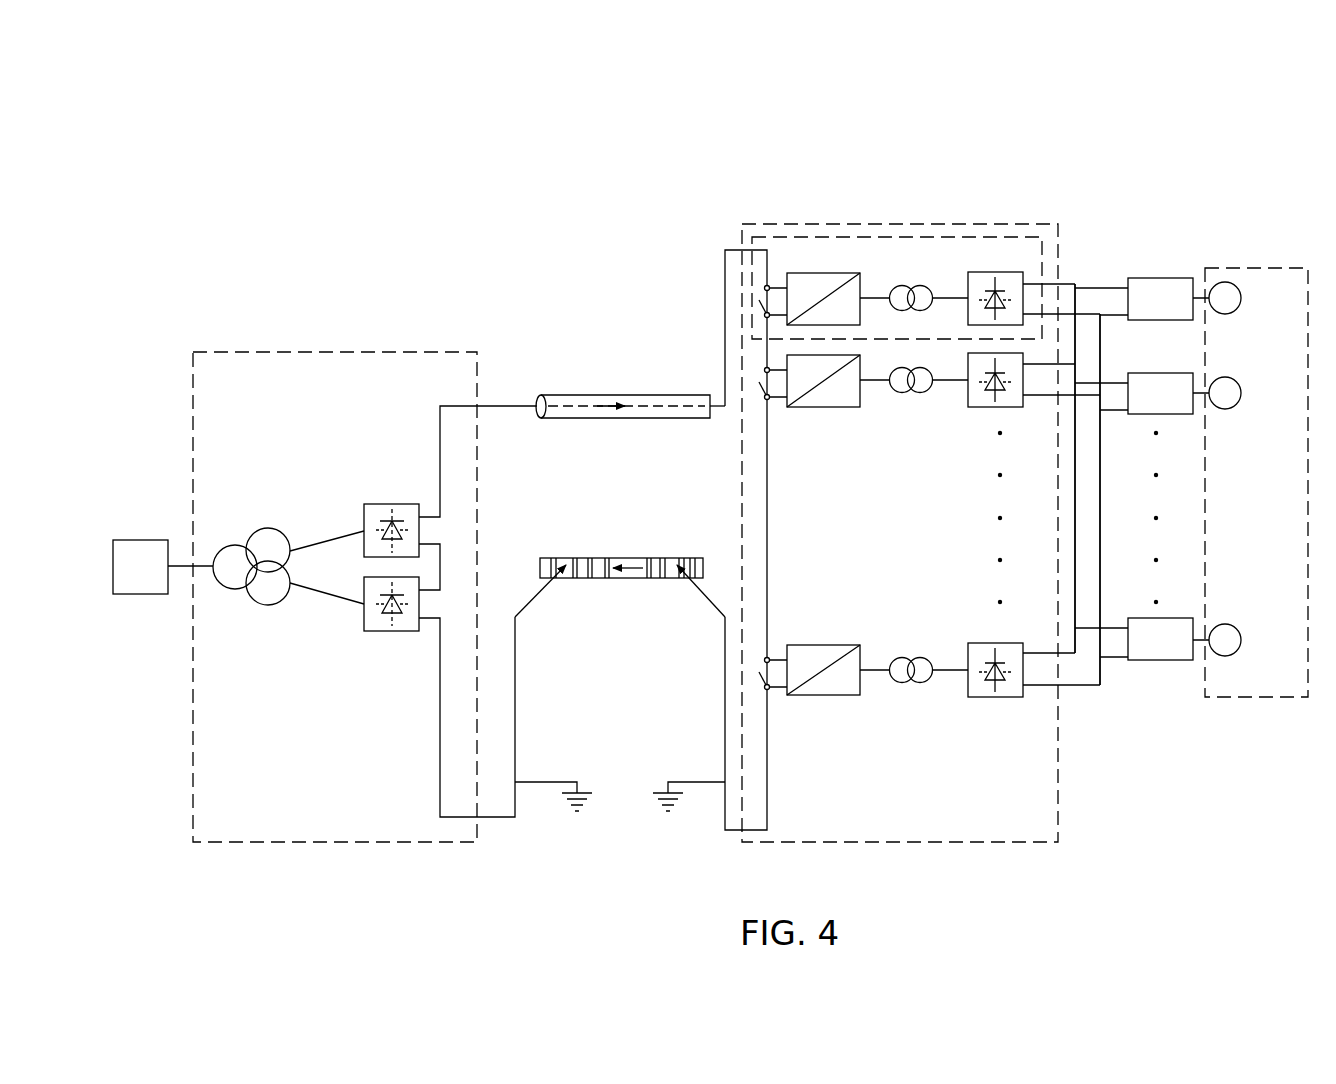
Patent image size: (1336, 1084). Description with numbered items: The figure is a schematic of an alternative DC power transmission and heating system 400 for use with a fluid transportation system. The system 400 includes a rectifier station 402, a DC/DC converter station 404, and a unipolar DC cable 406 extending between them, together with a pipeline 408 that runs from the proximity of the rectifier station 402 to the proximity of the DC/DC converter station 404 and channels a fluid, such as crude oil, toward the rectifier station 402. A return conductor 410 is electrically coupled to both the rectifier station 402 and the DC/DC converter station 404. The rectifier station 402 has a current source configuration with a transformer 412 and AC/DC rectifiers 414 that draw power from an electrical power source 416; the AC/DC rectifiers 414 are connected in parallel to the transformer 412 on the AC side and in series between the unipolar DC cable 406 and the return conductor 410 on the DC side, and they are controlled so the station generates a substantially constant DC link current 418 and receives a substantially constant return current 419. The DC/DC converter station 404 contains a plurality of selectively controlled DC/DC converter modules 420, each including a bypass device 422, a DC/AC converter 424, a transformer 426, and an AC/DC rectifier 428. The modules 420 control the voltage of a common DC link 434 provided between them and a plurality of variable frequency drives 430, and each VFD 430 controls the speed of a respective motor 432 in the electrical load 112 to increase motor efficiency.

The DC power transmission and heating system 400 is at (1130, 142).
The rectifier station 402 is at (380, 352).
The DC/DC converter station 404 is at (1040, 224).
The unipolar DC cable 406 is at (553, 395).
The pipeline 408 is at (580, 580).
The return conductor 410 is at (662, 580).
The transformer 412 is at (268, 528).
The AC/DC rectifiers 414 is at (398, 504).
The electrical power source 416 is at (146, 540).
The DC link current 418 is at (630, 418).
The return current 419 is at (617, 578).
The DC/DC converter modules 420 is at (945, 237).
The bypass device 422 is at (764, 288).
The DC/AC converter 424 is at (828, 697).
The transformer 426 is at (903, 683).
The AC/DC rectifier 428 is at (1000, 697).
The variable frequency drives 430 is at (1155, 278).
The motor 432 is at (1226, 282).
The common DC link 434 is at (1085, 287).
The electrical load 112 is at (1294, 268).